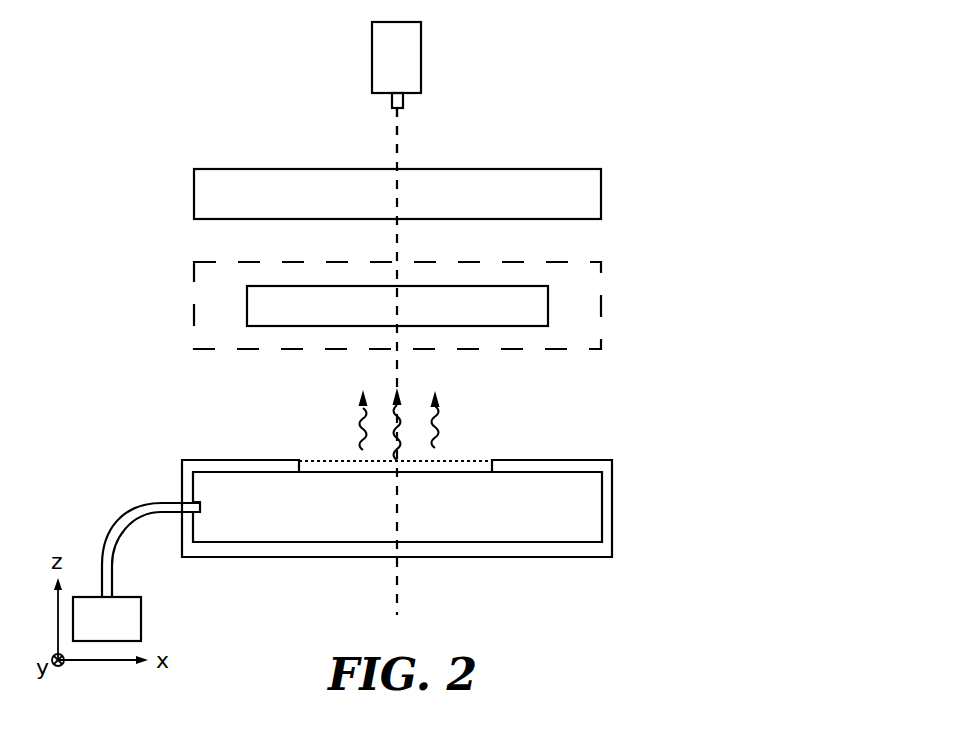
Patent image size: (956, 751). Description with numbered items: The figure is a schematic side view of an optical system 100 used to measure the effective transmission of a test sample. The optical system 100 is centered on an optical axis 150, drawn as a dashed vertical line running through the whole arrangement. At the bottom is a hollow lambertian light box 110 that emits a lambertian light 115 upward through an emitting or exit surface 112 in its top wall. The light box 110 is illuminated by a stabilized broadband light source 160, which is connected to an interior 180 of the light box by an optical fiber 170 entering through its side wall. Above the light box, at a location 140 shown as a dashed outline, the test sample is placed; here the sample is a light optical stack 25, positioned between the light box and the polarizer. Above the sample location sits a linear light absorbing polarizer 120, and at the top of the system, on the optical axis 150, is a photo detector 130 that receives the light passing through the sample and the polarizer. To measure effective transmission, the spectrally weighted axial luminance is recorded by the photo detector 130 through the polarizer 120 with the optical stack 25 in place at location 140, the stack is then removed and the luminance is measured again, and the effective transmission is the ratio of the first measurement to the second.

The optical system 100 is at (267, 63).
The photo detector 130 is at (421, 62).
The optical axis 150 is at (397, 141).
The linear light absorbing polarizer 120 is at (601, 196).
The location 140 is at (601, 287).
The light optical stack 25 is at (548, 306).
The lambertian light 115 is at (358, 431).
The emitting or exit surface 112 is at (474, 461).
The hollow lambertian light box 110 is at (612, 495).
The interior 180 is at (590, 533).
The optical fiber 170 is at (111, 531).
The stabilized broadband light source 160 is at (141, 618).